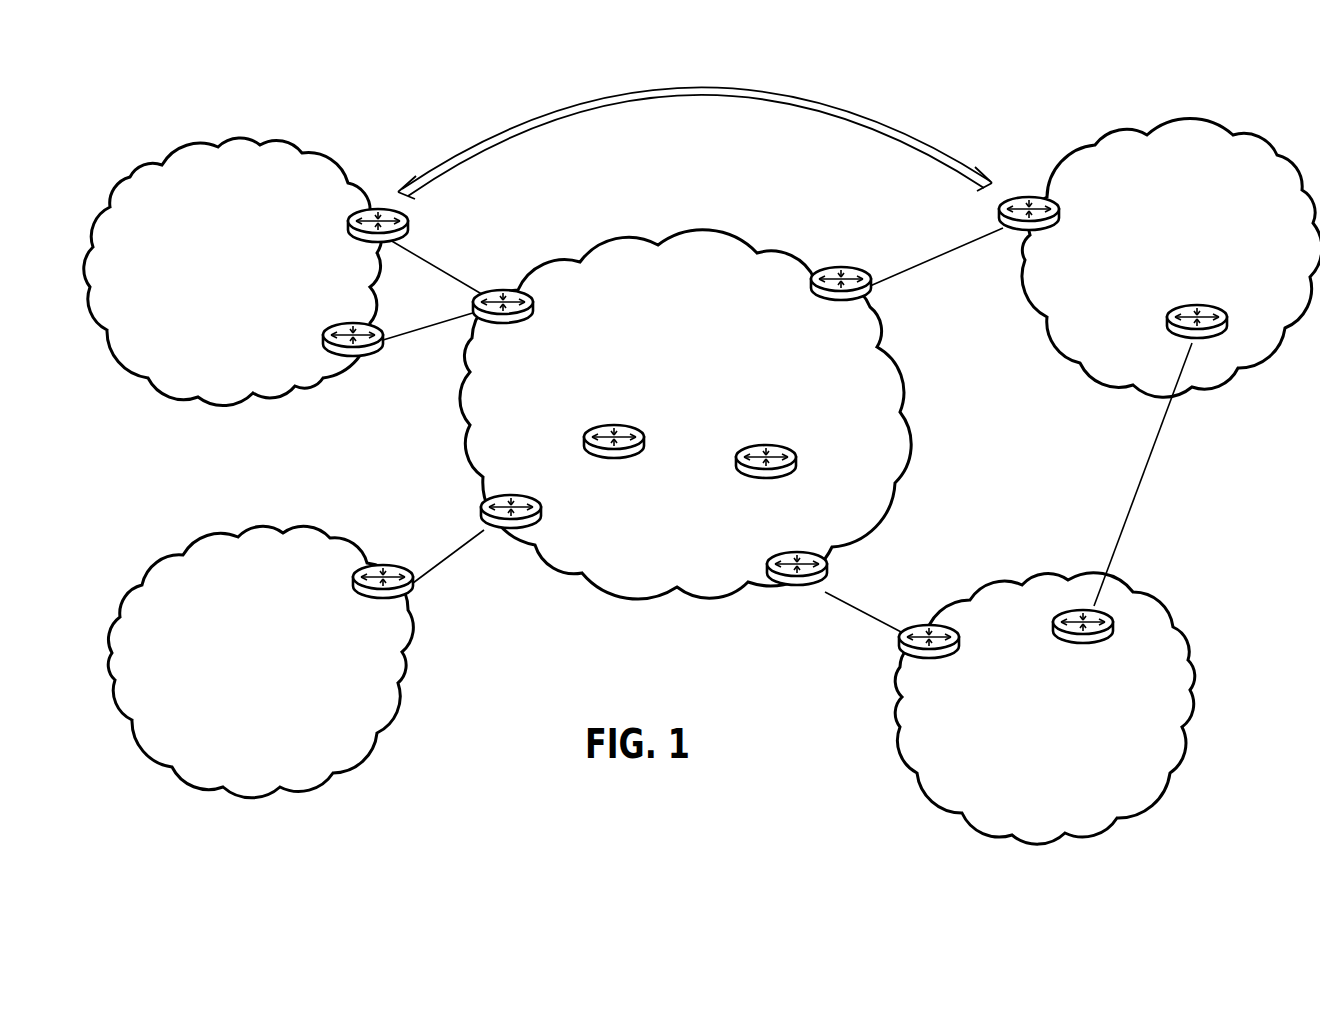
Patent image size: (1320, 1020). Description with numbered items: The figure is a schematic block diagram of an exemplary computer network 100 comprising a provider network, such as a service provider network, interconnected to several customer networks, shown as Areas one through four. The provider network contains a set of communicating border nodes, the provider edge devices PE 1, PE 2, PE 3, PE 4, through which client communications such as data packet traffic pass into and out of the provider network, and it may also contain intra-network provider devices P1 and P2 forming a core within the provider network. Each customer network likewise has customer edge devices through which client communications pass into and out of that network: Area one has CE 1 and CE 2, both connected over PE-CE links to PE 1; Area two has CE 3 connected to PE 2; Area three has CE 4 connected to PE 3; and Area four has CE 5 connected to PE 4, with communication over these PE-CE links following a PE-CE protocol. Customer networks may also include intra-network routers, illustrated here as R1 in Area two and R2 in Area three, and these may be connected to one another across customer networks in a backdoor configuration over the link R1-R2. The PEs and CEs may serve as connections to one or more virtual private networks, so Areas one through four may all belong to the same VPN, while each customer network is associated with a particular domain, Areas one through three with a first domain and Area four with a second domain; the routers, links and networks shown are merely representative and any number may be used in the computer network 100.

The computer network 100 is at (1013, 113).
The customer edge device CE 1 is at (350, 221).
The customer edge device CE 2 is at (325, 337).
The customer edge device CE 3 is at (1050, 233).
The customer edge device CE 4 is at (940, 666).
The customer edge device CE 5 is at (353, 591).
The provider edge device PE 1 is at (533, 299).
The provider edge device PE 2 is at (812, 284).
The provider edge device PE 3 is at (773, 556).
The provider edge device PE 4 is at (543, 517).
The provider device P1 is at (610, 470).
The provider device P2 is at (797, 470).
The intra-network router R1 is at (1227, 330).
The intra-network router R2 is at (1055, 630).